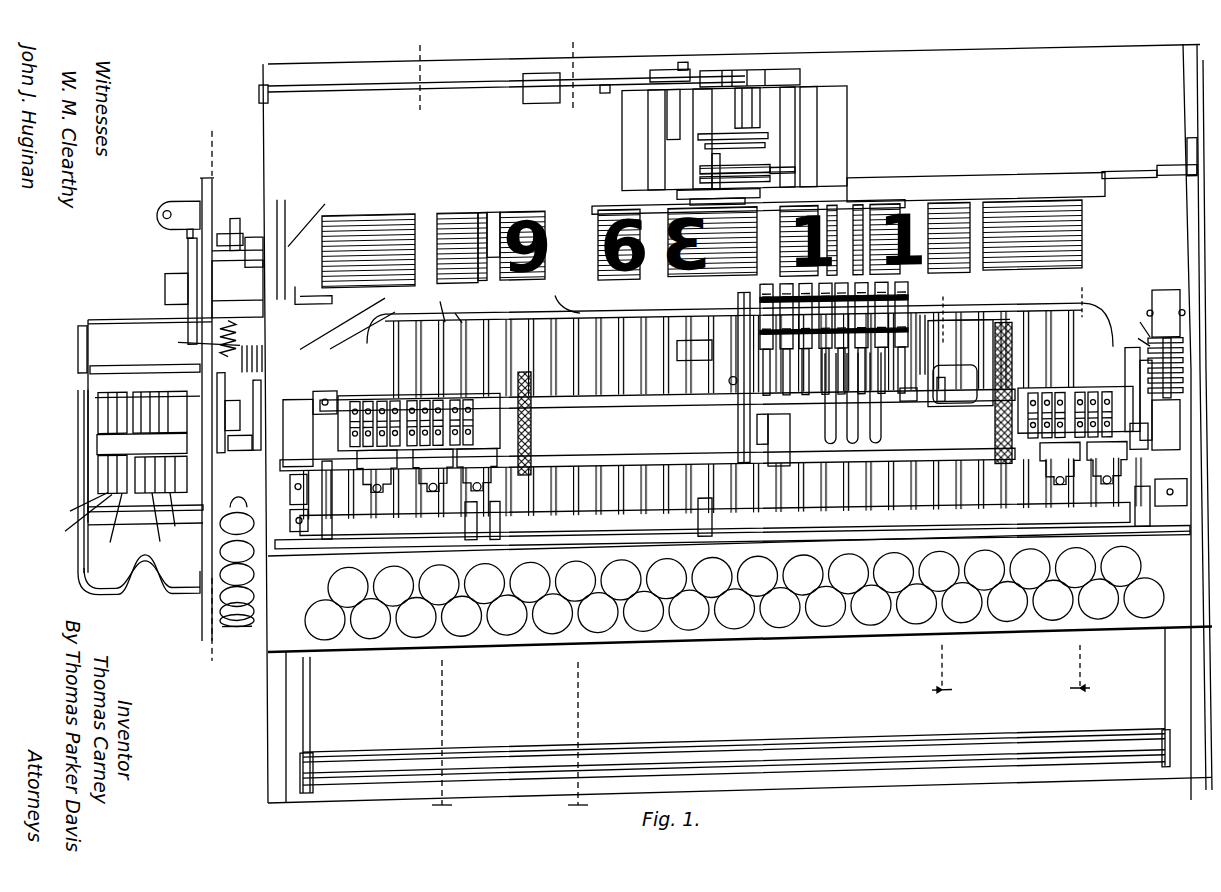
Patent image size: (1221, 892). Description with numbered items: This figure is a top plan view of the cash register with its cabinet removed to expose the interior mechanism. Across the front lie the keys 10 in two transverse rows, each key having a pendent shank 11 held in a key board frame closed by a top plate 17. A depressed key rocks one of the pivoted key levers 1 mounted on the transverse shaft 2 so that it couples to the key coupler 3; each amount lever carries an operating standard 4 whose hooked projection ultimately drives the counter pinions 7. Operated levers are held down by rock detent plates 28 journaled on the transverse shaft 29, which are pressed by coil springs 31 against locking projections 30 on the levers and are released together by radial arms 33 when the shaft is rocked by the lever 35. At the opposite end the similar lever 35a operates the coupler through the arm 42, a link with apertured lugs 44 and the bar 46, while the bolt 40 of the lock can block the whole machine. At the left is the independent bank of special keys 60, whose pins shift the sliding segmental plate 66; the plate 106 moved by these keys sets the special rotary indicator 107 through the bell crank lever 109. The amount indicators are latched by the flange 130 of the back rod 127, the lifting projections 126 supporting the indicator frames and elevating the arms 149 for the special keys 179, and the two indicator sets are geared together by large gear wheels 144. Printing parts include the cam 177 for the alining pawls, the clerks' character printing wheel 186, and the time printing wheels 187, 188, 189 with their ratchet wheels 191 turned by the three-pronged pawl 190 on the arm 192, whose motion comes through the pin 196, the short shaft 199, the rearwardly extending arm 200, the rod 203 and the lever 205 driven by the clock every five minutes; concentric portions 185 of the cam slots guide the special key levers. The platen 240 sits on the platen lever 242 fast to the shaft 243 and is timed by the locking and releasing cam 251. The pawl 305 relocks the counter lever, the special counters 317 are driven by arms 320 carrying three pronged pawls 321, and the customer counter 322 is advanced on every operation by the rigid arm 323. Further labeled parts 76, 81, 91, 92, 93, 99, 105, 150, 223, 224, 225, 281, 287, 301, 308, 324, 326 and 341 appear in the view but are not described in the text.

The key levers 1 is at (433, 427).
The transverse shaft 2 is at (577, 427).
The key coupler 3 is at (734, 356).
The operating standard 4 is at (675, 325).
The counter pinions 7 is at (945, 342).
The keys 10 is at (1055, 637).
The pendent shank 11 is at (1110, 510).
The top plate 17 is at (1134, 337).
The rock detent plates 28 is at (410, 535).
The transverse shaft 29 is at (732, 525).
The locking projection 30 is at (700, 753).
The coil springs 31 is at (290, 505).
The radial arms 33 is at (300, 532).
The lever 35 is at (345, 683).
The lever 35a is at (1160, 712).
The bolt 40 is at (1175, 406).
The arm 42 is at (1162, 304).
The apertured lugs 44 is at (1078, 295).
The bar 46 is at (1152, 317).
The keys 60 is at (245, 626).
The sliding segmental plate 66 is at (246, 455).
The bracket 76 is at (262, 263).
The spring 81 is at (250, 375).
The comb 91 is at (198, 339).
The counter wheel 92 is at (233, 420).
The counter wheel 93 is at (227, 407).
The block 99 is at (245, 450).
The frame plate 105 is at (368, 324).
The plate 106 is at (313, 282).
The special rotary indicator 107 is at (385, 225).
The bell crank lever 109 is at (315, 216).
The projection 126 is at (164, 522).
The back rod 127 is at (437, 304).
The flange 130 is at (510, 225).
The large gear wheels 144 is at (410, 316).
The arms 149 is at (486, 569).
The no sale indicator 150 is at (1085, 262).
The cam 177 is at (257, 228).
The special keys 179 is at (1140, 637).
The concentric portions 185 is at (142, 491).
The clerks' character printing wheel 186 is at (182, 515).
The time printing wheel 187 is at (106, 524).
The time printing wheel 188 is at (71, 516).
The time printing wheel 189 is at (71, 506).
The three-pronged pawl 190 is at (200, 310).
The ratchet wheels 191 is at (100, 465).
The arm 192 is at (100, 370).
The pin 196 is at (200, 338).
The short shaft 199 is at (945, 217).
The rearwardly extending arm 200 is at (268, 190).
The rod 203 is at (268, 95).
The lever 205 is at (340, 92).
The cover bar 223 is at (945, 190).
The bar 224 is at (1135, 189).
The bracket 225 is at (1187, 160).
The platen 240 is at (142, 443).
The platen lever 242 is at (188, 265).
The shaft 243 is at (175, 287).
The locking and releasing cam 251 is at (235, 233).
The frame bottom 281 is at (100, 582).
The frame curve 287 is at (145, 562).
The housing 301 is at (965, 359).
The pawl 305 is at (935, 415).
The pawl 308 is at (945, 412).
The special counters 317 is at (532, 448).
The arms 320 is at (1105, 498).
The three pronged pawls 321 is at (1075, 412).
The special counter 322 is at (340, 430).
The rigid arm 323 is at (449, 311).
The tab 324 is at (763, 467).
The tab 326 is at (377, 471).
The shaft 341 is at (1000, 438).